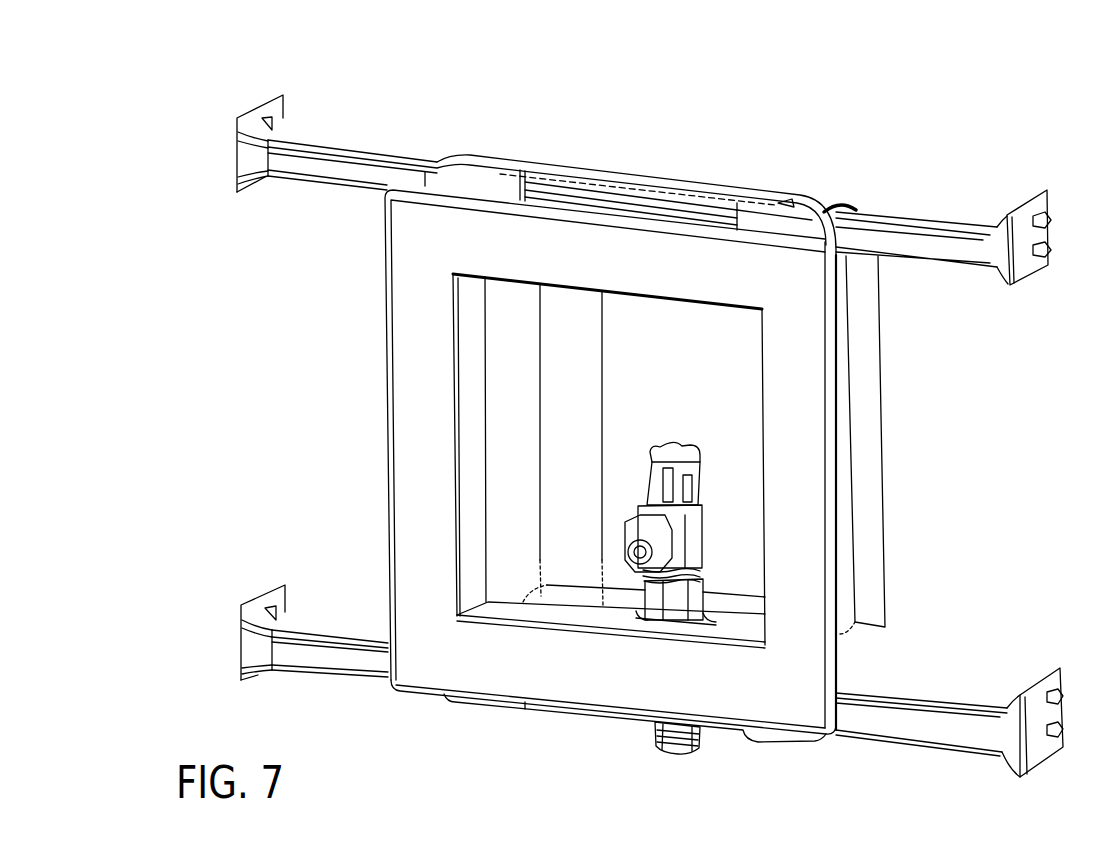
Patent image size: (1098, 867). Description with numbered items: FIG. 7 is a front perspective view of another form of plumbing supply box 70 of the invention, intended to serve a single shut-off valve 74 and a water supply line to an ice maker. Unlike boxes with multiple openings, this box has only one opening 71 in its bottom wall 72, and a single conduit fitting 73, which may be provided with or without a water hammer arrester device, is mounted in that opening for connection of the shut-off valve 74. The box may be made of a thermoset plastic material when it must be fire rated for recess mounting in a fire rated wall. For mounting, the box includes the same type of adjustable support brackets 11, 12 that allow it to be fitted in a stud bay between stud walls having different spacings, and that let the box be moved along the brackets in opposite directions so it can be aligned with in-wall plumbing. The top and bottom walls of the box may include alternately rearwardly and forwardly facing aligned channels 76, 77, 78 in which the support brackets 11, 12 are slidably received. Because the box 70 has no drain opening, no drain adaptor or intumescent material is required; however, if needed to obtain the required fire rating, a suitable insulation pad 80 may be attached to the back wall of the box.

The adjustable support bracket 11 is at (329, 152).
The adjustable support bracket 12 is at (942, 230).
The plumbing supply box 70 is at (475, 132).
The opening 71 is at (715, 617).
The bottom wall 72 is at (604, 608).
The conduit fitting 73 is at (700, 592).
The shut-off valve 74 is at (697, 512).
The channel 76 is at (494, 180).
The channel 77 is at (644, 172).
The channel 78 is at (765, 215).
The insulation pad 80 is at (830, 208).